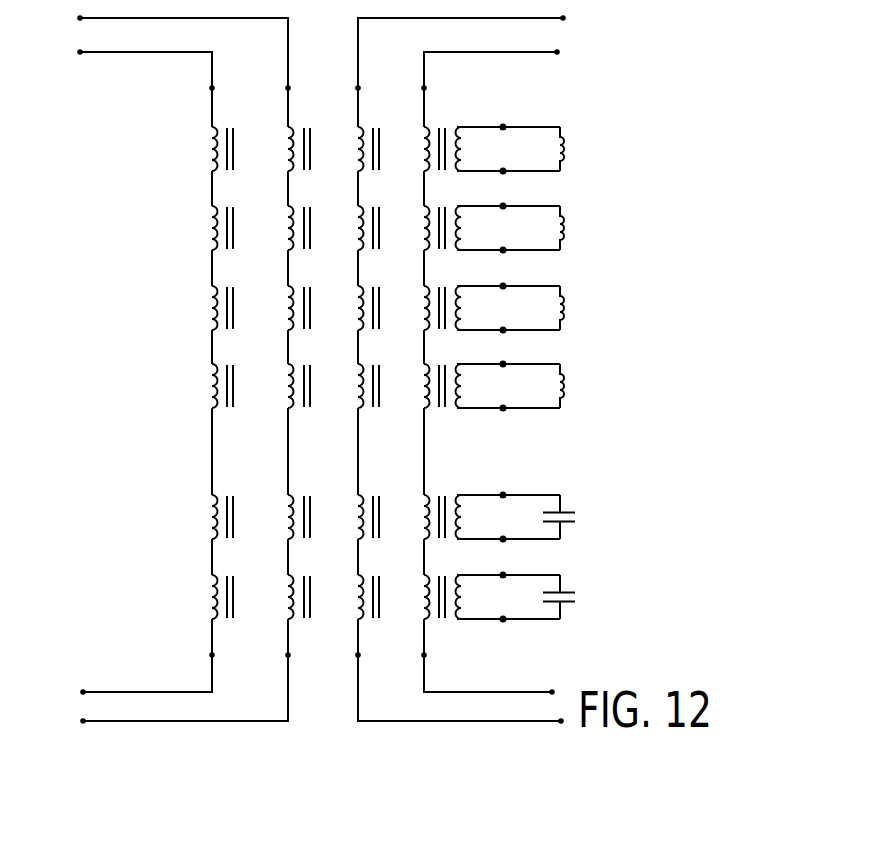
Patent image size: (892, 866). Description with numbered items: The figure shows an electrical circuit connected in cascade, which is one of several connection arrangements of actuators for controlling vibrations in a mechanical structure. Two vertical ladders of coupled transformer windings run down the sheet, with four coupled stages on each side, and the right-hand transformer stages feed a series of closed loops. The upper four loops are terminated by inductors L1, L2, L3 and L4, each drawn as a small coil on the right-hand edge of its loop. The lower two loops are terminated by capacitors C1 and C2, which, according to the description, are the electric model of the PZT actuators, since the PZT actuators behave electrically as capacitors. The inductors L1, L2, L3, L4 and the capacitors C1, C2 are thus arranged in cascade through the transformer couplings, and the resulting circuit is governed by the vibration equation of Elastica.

The inductor L1 is at (581, 150).
The inductor L2 is at (581, 229).
The inductor L3 is at (581, 309).
The inductor L4 is at (581, 387).
The capacitor C1 is at (579, 519).
The capacitor C2 is at (579, 599).